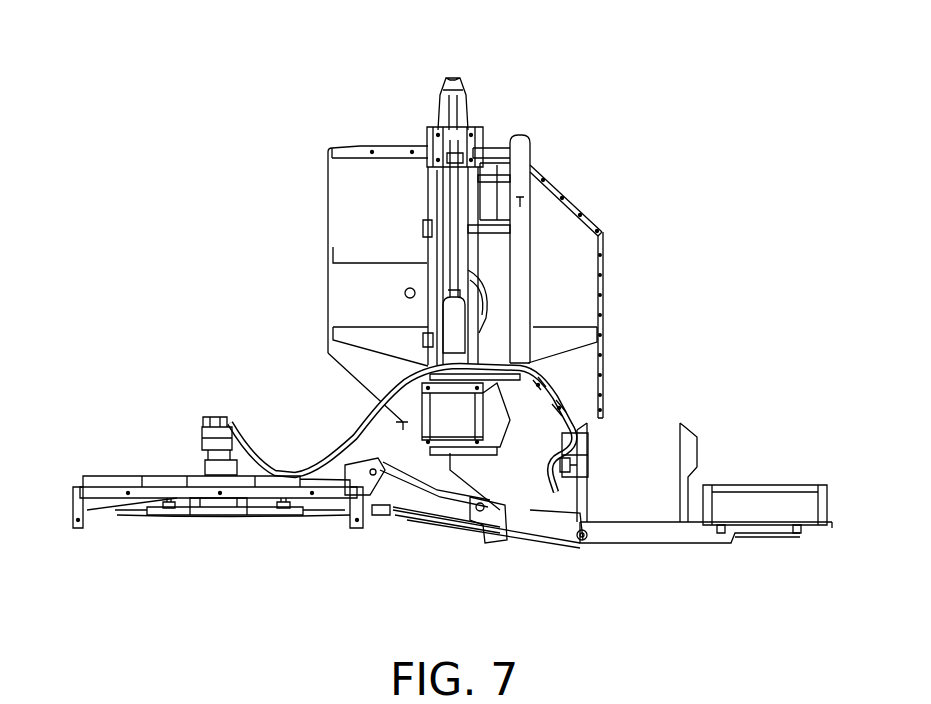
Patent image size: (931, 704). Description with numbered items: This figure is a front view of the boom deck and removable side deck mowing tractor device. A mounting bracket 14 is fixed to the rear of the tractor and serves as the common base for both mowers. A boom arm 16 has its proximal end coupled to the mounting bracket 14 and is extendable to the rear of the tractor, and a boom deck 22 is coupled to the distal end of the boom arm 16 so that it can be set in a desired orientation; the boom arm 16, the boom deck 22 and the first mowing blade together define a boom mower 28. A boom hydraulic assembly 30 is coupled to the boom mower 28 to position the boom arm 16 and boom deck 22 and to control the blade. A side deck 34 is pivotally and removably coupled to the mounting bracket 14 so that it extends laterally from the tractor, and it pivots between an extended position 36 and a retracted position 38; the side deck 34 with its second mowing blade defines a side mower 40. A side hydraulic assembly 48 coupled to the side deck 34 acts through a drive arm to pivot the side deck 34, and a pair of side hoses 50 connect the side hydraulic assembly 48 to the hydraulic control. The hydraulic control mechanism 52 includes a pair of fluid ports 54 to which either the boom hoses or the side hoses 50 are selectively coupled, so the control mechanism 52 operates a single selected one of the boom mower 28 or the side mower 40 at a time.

The mounting bracket 14 is at (633, 535).
The boom arm 16 is at (460, 220).
The boom deck 22 is at (350, 194).
The boom mower 28 is at (402, 130).
The boom hydraulic assembly 30 is at (487, 290).
The side deck 34 is at (100, 477).
The extended position 36 is at (363, 540).
The retracted position 38 is at (203, 520).
The side mower 40 is at (140, 457).
The side hydraulic assembly 48 is at (200, 422).
The side hoses 50 is at (332, 465).
The control mechanism 52 is at (555, 400).
The fluid ports 54 is at (547, 387).